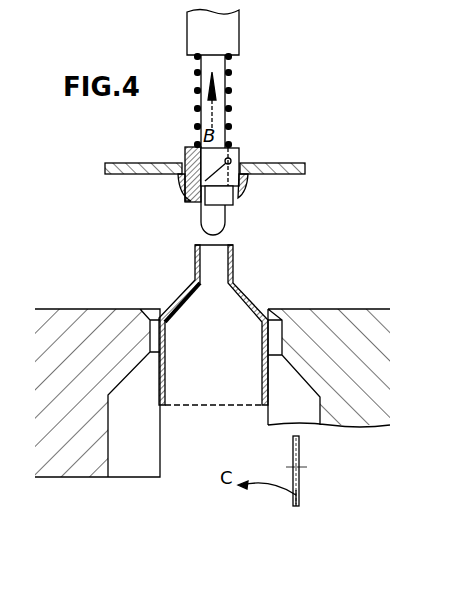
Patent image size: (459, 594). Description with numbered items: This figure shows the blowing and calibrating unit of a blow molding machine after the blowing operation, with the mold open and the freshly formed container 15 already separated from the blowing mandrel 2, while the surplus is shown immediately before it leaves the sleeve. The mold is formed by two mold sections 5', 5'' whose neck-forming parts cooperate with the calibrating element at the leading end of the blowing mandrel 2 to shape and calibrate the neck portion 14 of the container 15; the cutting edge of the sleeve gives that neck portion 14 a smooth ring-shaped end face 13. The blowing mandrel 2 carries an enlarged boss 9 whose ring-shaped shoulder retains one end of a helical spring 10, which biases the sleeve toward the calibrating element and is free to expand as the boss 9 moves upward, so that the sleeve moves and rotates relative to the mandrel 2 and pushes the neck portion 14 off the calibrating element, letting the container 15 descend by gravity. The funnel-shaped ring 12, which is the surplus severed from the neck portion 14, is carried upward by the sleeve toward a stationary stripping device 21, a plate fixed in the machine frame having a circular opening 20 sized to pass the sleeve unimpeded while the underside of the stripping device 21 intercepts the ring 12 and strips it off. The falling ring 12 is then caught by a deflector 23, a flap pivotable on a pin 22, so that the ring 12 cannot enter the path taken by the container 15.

The boss 9 is at (227, 45).
The blowing mandrel 2 is at (217, 98).
The helical spring 10 is at (193, 110).
The stripping device 21 is at (113, 162).
The circular opening 20 is at (242, 165).
The ring 12 is at (182, 190).
The end face 13 is at (233, 243).
The neck portion 14 is at (236, 262).
The container 15 is at (221, 361).
The mold section 5' is at (97, 376).
The mold section 5'' is at (329, 352).
The pin 22 is at (299, 438).
The deflector 23 is at (300, 492).